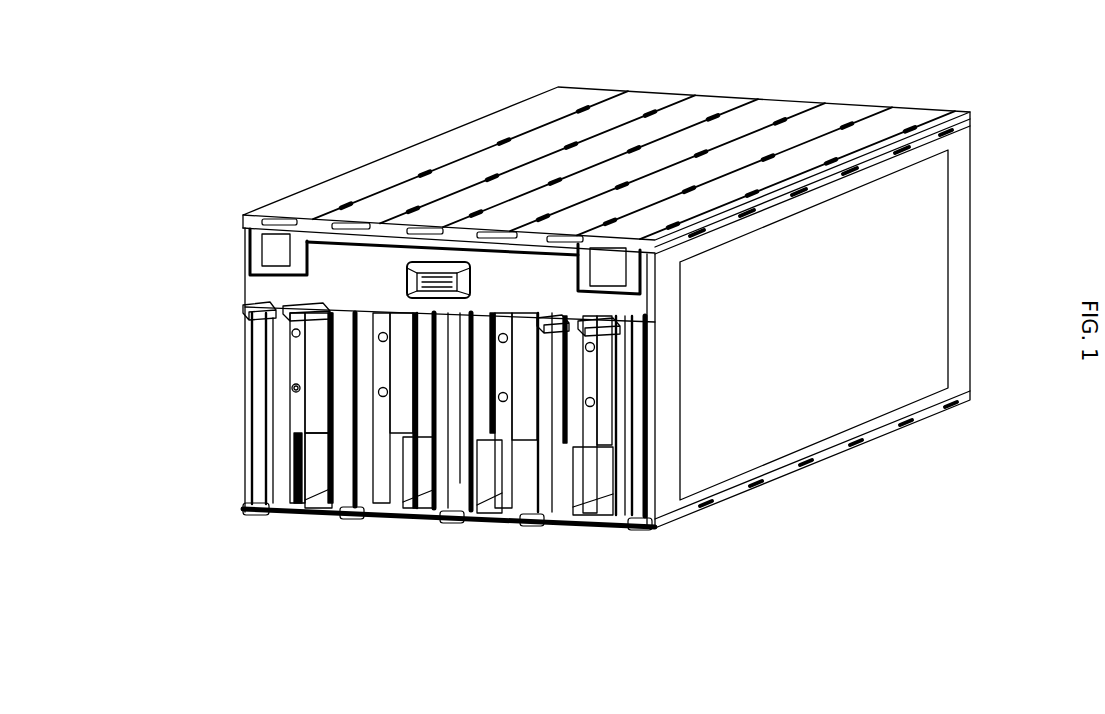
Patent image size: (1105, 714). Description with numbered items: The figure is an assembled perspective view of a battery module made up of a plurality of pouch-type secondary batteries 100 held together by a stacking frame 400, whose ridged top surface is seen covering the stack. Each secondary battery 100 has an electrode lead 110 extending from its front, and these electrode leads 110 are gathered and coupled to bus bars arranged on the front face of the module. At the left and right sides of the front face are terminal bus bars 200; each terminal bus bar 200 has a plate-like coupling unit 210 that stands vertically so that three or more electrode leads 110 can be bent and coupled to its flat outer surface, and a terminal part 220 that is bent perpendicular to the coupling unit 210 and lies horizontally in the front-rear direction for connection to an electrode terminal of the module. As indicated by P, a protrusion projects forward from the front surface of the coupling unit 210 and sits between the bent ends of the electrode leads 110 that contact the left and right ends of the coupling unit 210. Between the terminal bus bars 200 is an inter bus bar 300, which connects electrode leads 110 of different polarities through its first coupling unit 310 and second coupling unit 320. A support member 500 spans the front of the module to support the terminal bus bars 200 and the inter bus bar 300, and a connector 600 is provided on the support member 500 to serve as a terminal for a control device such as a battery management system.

The secondary battery 100 is at (943, 262).
The electrode lead 110 is at (300, 416).
The terminal bus bar 200 is at (447, 407).
The coupling unit 210 is at (300, 407).
The terminal part 220 is at (243, 306).
The inter bus bar 300 is at (449, 528).
The first coupling unit 310 is at (470, 520).
The second coupling unit 320 is at (411, 518).
The stacking frame 400 is at (650, 101).
The support member 500 is at (340, 258).
The connector 600 is at (412, 262).
The protrusion P is at (294, 387).